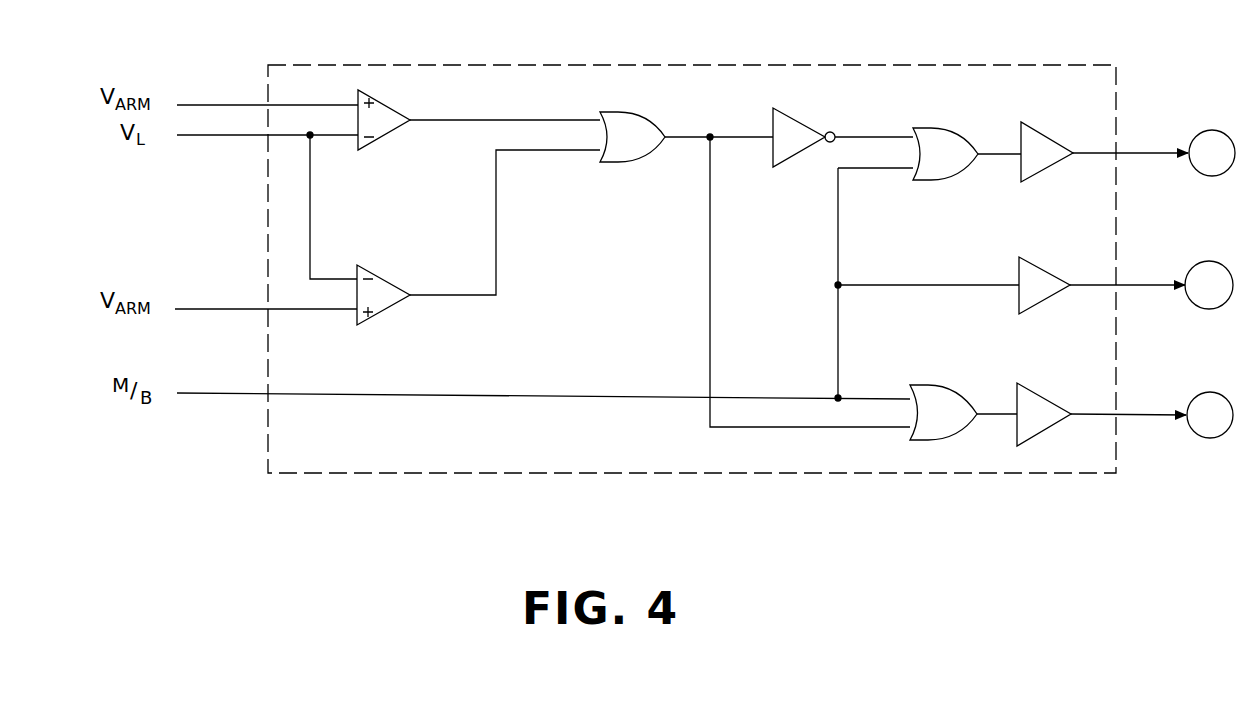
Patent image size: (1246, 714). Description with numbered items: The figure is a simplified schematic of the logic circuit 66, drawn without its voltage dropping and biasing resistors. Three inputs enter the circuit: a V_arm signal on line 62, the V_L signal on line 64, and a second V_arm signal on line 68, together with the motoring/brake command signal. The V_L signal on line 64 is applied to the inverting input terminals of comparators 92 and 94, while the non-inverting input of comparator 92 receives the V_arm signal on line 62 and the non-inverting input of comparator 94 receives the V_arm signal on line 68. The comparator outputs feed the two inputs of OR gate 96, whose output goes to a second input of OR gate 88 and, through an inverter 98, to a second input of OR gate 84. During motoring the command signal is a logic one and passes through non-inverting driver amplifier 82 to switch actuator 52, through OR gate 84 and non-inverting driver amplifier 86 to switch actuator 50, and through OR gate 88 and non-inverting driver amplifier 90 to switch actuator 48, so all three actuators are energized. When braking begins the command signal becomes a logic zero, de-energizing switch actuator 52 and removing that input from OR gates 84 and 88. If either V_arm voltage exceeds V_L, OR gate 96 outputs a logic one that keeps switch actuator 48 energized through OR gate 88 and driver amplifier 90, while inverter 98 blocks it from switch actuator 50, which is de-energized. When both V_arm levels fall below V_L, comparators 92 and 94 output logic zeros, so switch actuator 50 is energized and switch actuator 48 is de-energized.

The logic circuit 66 is at (660, 65).
The line 62 is at (234, 103).
The line 64 is at (246, 137).
The line 68 is at (233, 309).
The comparator 92 is at (392, 141).
The comparator 94 is at (392, 316).
The OR gate 96 is at (630, 162).
The inverter 98 is at (812, 132).
The OR gate 84 is at (955, 130).
The non-inverting driver amplifier 86 is at (1060, 129).
The non-inverting driver amplifier 82 is at (1050, 263).
The OR gate 88 is at (945, 385).
The non-inverting driver amplifier 90 is at (1056, 394).
The switch actuator 50 is at (1154, 153).
The switch actuator 52 is at (1151, 285).
The switch actuator 48 is at (1152, 415).